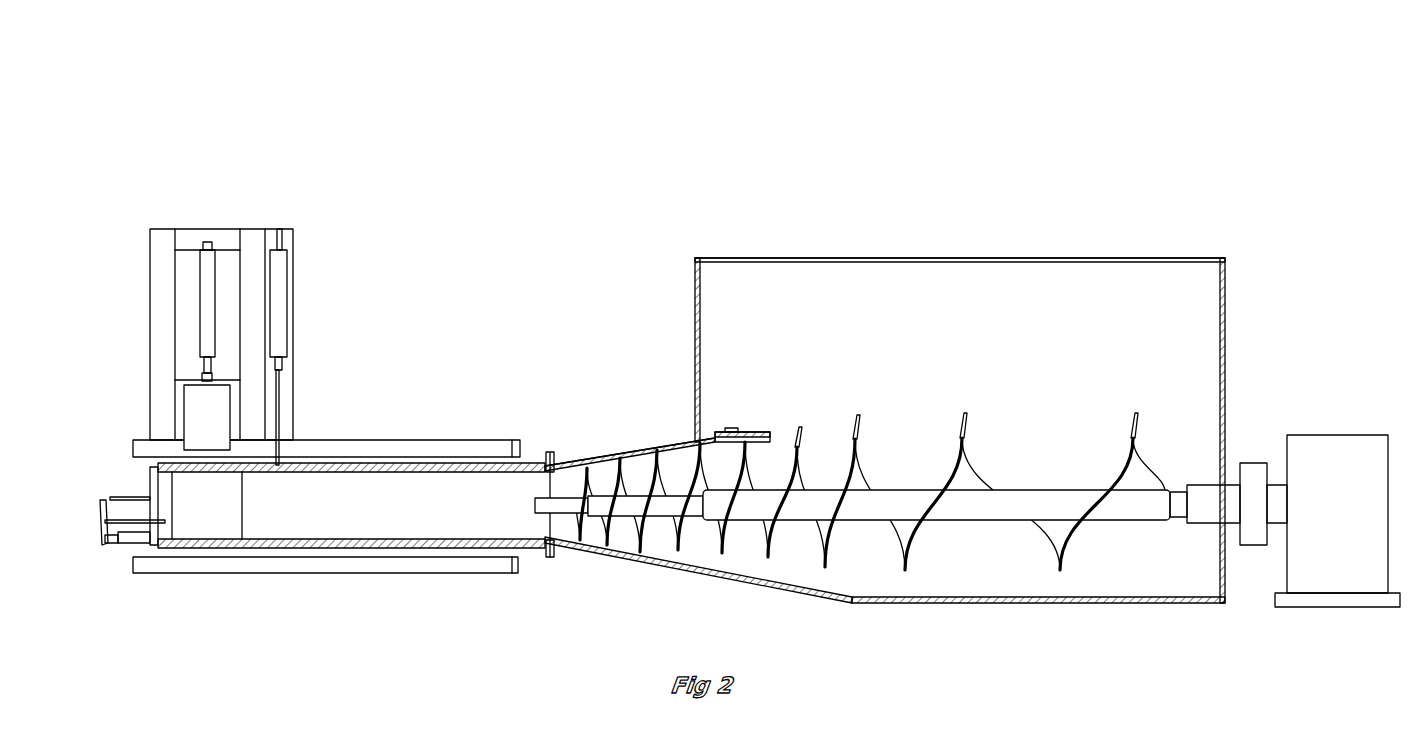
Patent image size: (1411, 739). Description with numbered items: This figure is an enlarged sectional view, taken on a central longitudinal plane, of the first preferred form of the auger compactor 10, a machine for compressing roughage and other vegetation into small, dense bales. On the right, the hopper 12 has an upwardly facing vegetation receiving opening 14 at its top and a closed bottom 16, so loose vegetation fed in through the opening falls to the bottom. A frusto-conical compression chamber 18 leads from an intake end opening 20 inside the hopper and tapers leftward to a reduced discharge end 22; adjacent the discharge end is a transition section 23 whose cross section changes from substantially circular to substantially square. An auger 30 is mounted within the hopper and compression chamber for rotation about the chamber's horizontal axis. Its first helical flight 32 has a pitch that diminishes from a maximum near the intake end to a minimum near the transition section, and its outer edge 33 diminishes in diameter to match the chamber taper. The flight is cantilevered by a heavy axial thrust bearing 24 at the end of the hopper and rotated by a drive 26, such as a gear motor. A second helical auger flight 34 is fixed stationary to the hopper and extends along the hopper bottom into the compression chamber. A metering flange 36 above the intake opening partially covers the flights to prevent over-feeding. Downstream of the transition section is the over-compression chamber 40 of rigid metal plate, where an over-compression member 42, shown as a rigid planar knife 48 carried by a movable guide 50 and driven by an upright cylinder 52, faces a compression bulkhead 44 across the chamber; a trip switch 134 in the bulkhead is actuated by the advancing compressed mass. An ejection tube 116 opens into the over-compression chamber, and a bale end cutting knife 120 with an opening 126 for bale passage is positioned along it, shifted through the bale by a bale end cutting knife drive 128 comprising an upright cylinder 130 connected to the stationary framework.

The auger compactor 10 is at (786, 162).
The hopper 12 is at (1009, 256).
The vegetation receiving opening 14 is at (880, 258).
The closed bottom 16 is at (984, 601).
The compression chamber 18 is at (663, 582).
The intake end opening 20 is at (693, 442).
The discharge end 22 is at (556, 476).
The transition section 23 is at (517, 527).
The axial thrust bearing 24 is at (1206, 515).
The drive 26 is at (1347, 432).
The auger 30 is at (852, 452).
The first helical flight 32 is at (983, 479).
The outer edge 33 is at (856, 441).
The second helical auger flight 34 is at (958, 416).
The metering flange 36 is at (745, 430).
The over-compression chamber 40 is at (199, 540).
The over-compression member 42 is at (302, 396).
The compression bulkhead 44 is at (168, 499).
The rigid planar knife 48 is at (283, 435).
The movable guide 50 is at (303, 299).
The upright cylinder 52 is at (284, 280).
The ejection tube 116 is at (242, 500).
The bale end cutting knife 120 is at (183, 418).
The opening 126 is at (188, 392).
The bale end cutting knife drive 128 is at (183, 284).
The upright cylinder 130 is at (203, 270).
The trip switch 134 is at (170, 531).